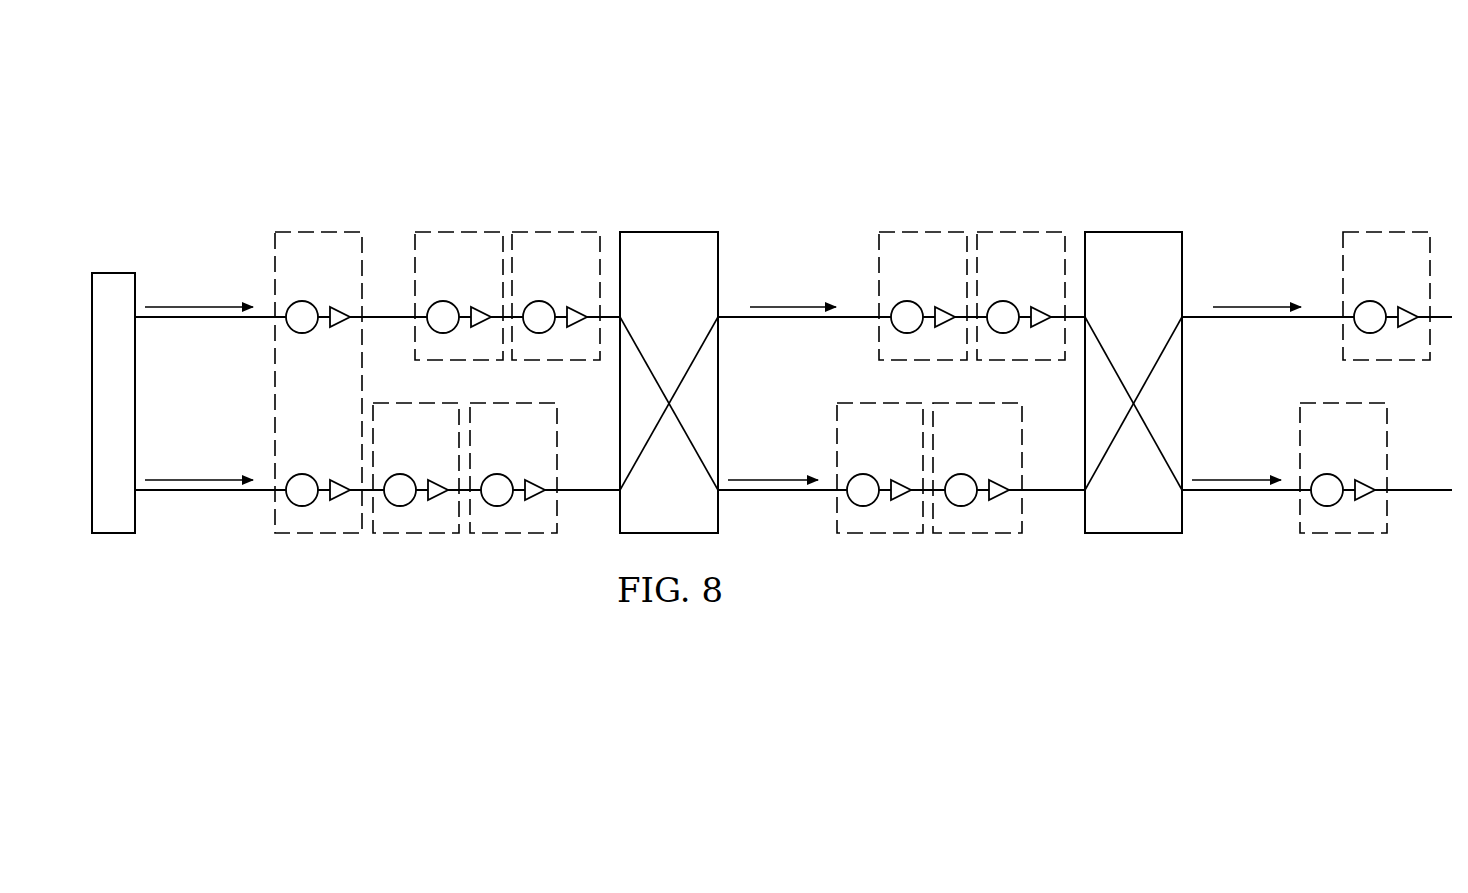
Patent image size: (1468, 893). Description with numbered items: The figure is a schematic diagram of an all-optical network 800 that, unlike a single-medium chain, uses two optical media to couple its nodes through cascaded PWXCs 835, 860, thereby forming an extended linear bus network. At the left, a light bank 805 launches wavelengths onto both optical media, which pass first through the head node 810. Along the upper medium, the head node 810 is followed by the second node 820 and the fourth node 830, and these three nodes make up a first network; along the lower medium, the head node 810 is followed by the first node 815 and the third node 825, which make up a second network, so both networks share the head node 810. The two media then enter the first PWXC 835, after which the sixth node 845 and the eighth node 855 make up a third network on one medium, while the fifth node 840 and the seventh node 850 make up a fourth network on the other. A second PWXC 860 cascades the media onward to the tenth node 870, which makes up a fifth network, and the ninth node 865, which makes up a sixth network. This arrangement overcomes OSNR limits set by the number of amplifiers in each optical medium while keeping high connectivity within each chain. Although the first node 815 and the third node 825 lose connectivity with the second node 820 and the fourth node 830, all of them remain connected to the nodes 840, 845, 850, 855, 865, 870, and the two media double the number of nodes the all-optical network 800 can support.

The all-optical network 800 is at (1118, 122).
The light bank 805 is at (115, 273).
The head node 810 is at (308, 230).
The node 1 815 is at (402, 537).
The node 2 820 is at (445, 230).
The node 3 825 is at (497, 537).
The node 4 830 is at (540, 230).
The PWXC 835 is at (650, 230).
The node 5 840 is at (893, 537).
The node 6 845 is at (936, 230).
The node 7 850 is at (990, 537).
The node 8 855 is at (1033, 230).
The PWXC 860 is at (1150, 230).
The node 9 865 is at (1357, 537).
The node 10 870 is at (1398, 230).